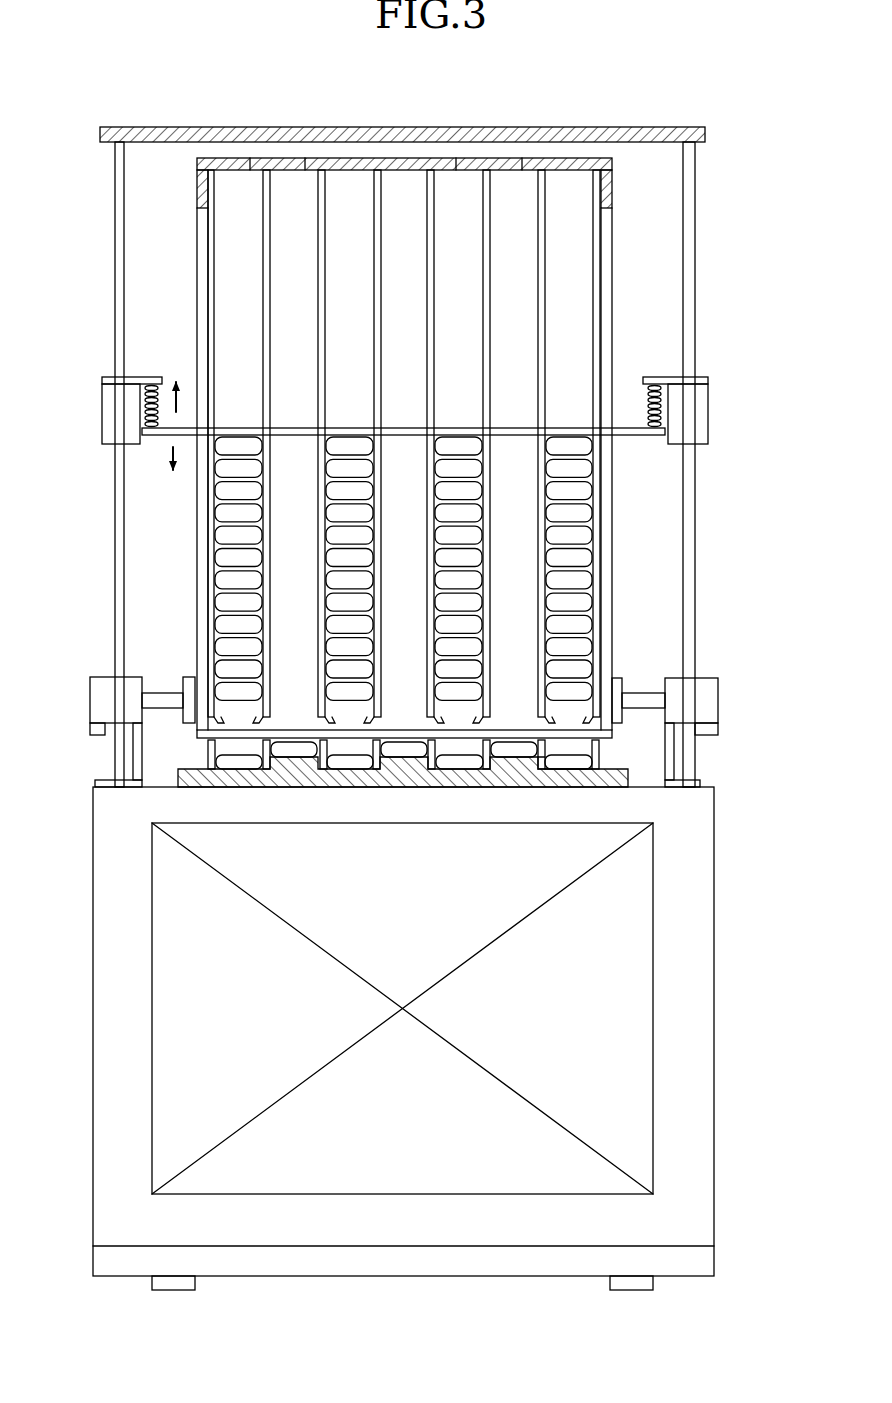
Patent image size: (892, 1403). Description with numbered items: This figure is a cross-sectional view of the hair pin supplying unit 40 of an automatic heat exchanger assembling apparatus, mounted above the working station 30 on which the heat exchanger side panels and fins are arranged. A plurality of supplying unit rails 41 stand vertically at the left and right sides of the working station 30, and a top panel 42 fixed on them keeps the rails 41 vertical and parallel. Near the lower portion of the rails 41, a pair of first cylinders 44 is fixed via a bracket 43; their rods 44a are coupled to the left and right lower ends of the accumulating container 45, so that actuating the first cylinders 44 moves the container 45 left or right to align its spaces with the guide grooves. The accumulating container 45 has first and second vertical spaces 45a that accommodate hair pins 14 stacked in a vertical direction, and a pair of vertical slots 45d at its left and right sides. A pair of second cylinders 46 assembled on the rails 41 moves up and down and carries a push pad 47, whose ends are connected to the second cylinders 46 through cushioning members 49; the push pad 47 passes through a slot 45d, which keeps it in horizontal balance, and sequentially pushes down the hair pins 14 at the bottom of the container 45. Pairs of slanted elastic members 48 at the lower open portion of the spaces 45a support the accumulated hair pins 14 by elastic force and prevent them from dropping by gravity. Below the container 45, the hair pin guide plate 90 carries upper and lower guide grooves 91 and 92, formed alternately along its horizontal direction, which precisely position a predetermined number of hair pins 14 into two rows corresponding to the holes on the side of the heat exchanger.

The hair pin 14 is at (215, 570).
The working station 30 is at (707, 1075).
The hair pin supplying unit 40 is at (697, 318).
The supplying unit rail 41 is at (119, 218).
The top panel 42 is at (628, 136).
The bracket 43 is at (105, 730).
The first cylinder 44 is at (92, 690).
The rod 44a is at (160, 695).
The accumulating container 45 is at (615, 181).
The vertical space 45a is at (303, 183).
The slot 45d is at (203, 266).
The second cylinder 46 is at (110, 432).
The push pad 47 is at (640, 436).
The elastic member 48 is at (214, 722).
The cushioning member 49 is at (148, 392).
The hair pin guide plate 90 is at (633, 761).
The upper guide groove 91 is at (572, 790).
The lower guide groove 92 is at (565, 762).